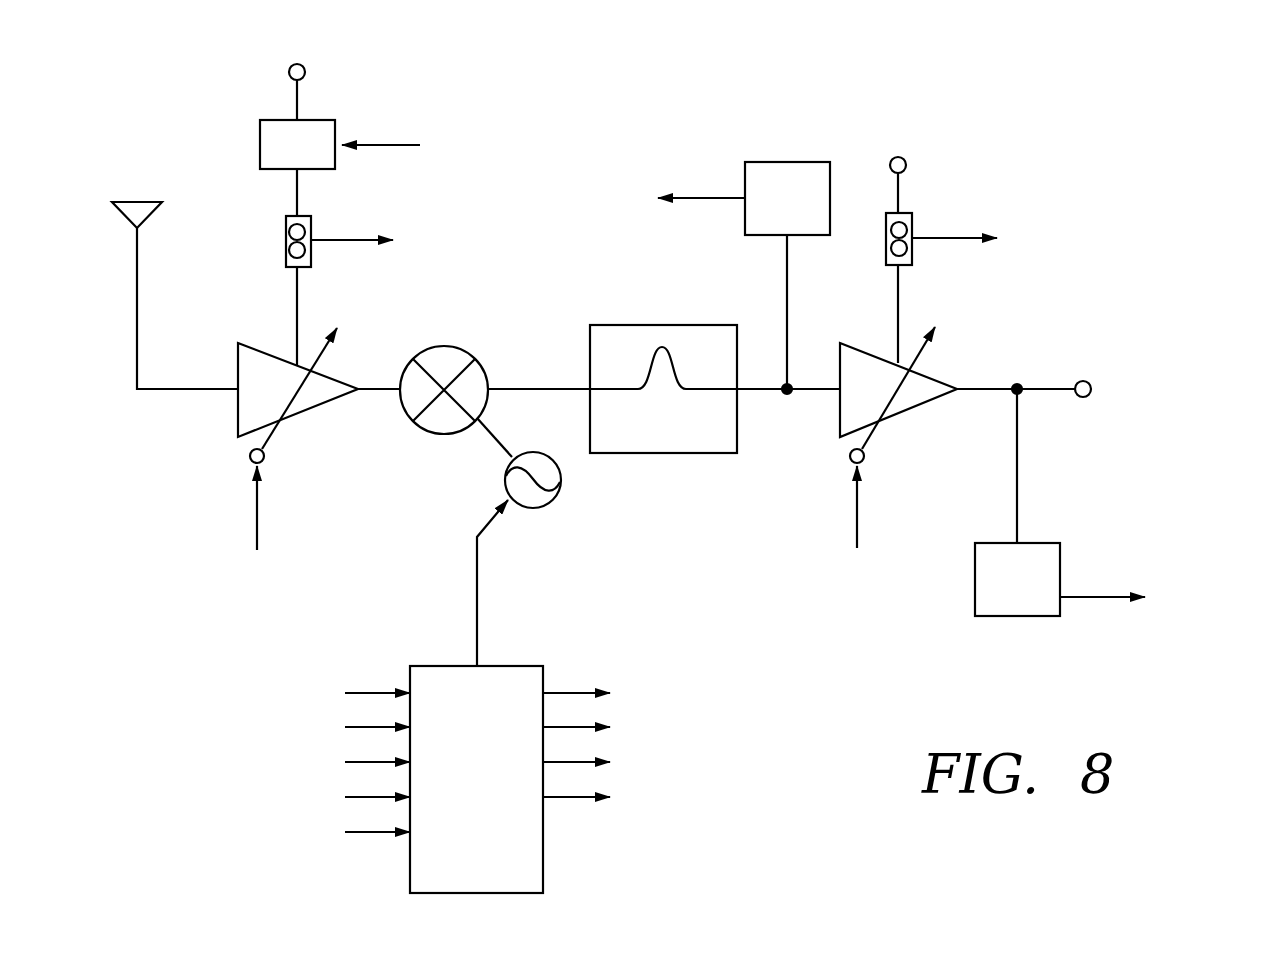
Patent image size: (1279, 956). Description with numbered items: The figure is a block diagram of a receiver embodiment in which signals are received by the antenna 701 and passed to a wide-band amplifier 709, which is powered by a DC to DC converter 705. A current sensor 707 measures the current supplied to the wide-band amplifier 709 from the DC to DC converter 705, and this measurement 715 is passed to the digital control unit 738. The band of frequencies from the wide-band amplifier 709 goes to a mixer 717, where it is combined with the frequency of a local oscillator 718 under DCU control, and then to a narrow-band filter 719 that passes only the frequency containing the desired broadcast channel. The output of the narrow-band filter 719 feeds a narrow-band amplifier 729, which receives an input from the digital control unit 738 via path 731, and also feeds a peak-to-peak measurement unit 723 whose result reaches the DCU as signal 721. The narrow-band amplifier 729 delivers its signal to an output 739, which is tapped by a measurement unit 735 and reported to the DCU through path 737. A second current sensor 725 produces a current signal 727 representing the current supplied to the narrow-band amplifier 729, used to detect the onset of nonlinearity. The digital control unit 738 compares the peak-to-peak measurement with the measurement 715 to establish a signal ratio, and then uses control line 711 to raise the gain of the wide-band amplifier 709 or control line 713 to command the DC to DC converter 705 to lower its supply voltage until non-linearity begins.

The antenna 701 is at (136, 200).
The DC to DC converter 705 is at (284, 130).
The current sensor 707 is at (286, 241).
The wide-band amplifier 709 is at (237, 415).
The control line 711 is at (257, 515).
The control line 713 is at (390, 143).
The measurement 715 is at (345, 243).
The mixer 717 is at (435, 433).
The local oscillator 718 is at (513, 505).
The narrow-band filter 719 is at (668, 453).
The signal 721 is at (713, 198).
The peak-to-peak measurement unit 723 is at (787, 275).
The current sensor 725 is at (912, 222).
The current signal 727 is at (940, 242).
The narrow-band amplifier 729 is at (913, 410).
The path 731 is at (855, 512).
The measurement unit 735 is at (1017, 502).
The path 737 is at (1093, 597).
The digital control unit 738 is at (498, 870).
The output 739 is at (1109, 388).